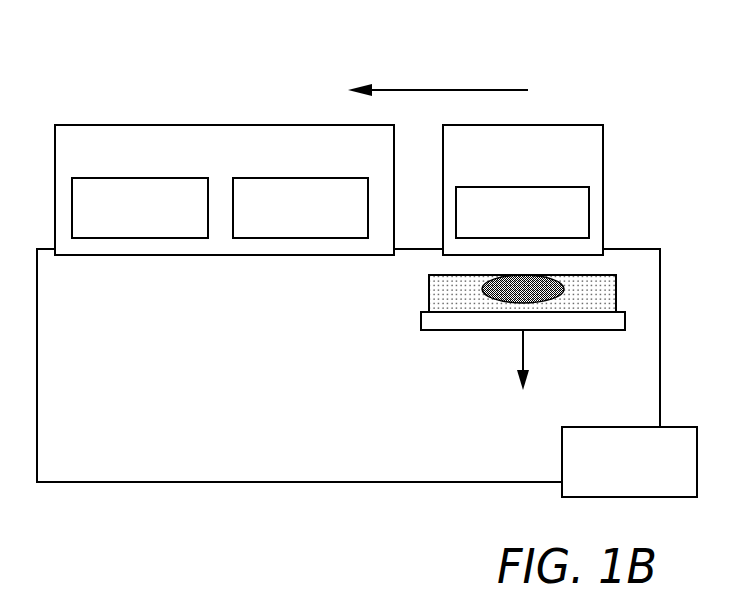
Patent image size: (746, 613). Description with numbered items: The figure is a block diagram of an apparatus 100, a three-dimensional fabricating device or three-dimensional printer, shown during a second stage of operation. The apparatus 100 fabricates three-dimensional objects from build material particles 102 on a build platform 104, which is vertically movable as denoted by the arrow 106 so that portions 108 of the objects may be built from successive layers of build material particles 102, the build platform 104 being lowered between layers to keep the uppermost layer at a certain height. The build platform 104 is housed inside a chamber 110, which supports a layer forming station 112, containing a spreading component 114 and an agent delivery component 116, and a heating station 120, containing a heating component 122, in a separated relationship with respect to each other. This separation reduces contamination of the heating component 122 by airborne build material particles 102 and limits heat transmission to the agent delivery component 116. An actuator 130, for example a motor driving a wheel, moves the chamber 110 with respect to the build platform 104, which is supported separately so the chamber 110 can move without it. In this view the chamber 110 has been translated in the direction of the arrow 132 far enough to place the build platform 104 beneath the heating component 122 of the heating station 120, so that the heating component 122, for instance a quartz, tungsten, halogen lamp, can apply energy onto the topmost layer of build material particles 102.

The apparatus 100 is at (543, 46).
The build material particles 102 is at (429, 302).
The build platform 104 is at (456, 331).
The arrow 106 is at (525, 345).
The portions of 3D objects 108 is at (482, 289).
The chamber 110 is at (98, 451).
The layer forming station 112 is at (202, 164).
The spreading component 114 is at (120, 221).
The agent delivery component 116 is at (280, 221).
The heating station 120 is at (503, 164).
The heating component 122 is at (522, 212).
The actuator 130 is at (610, 471).
The arrow 132 is at (418, 90).